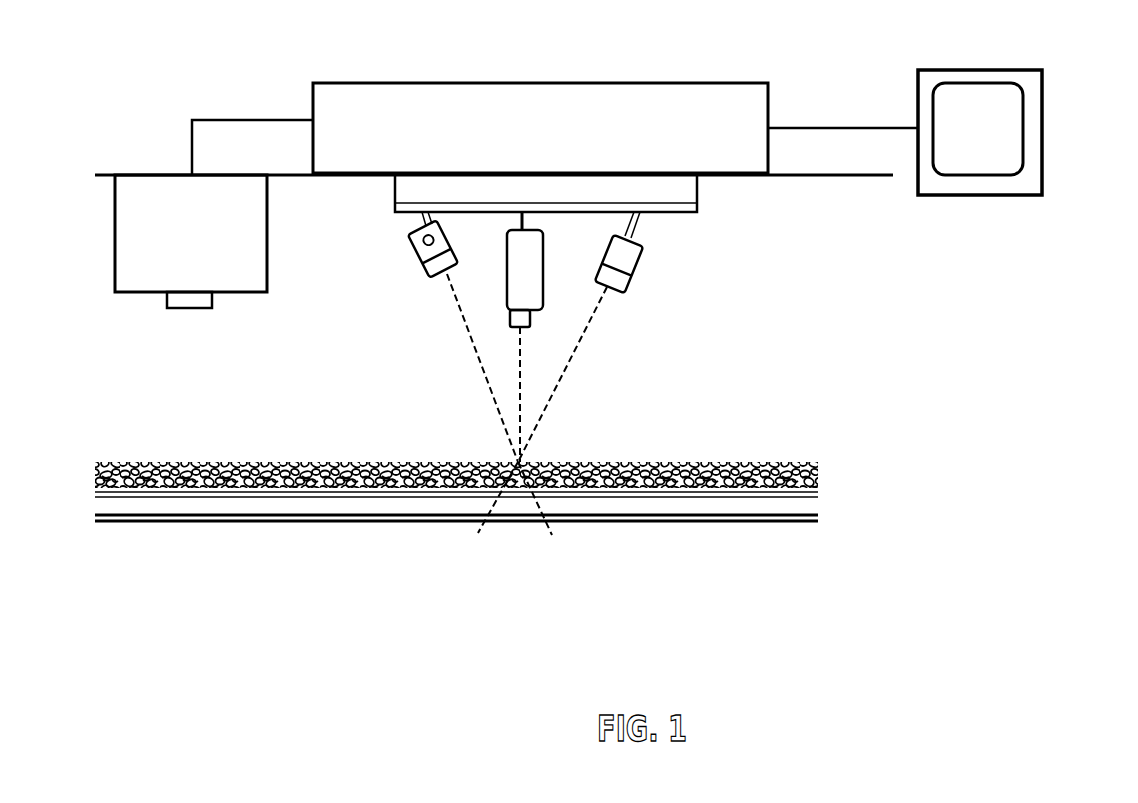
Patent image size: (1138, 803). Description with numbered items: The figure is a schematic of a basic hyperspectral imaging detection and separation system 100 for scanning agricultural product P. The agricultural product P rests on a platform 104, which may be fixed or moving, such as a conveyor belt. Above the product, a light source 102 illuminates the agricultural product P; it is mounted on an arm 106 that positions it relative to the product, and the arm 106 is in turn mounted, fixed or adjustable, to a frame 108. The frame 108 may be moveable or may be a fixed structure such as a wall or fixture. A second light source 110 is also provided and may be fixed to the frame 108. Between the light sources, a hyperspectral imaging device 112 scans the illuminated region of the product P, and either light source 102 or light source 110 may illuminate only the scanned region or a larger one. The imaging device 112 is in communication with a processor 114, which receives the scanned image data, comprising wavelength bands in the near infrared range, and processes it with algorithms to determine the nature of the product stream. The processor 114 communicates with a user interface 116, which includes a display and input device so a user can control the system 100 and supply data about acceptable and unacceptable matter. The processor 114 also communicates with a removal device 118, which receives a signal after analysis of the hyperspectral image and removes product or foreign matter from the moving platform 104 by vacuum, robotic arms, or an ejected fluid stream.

The system 100 is at (150, 46).
The light source 102 is at (637, 268).
The platform 104 is at (813, 510).
The arm 106 is at (642, 220).
The frame 108 is at (700, 187).
The second light source 110 is at (410, 243).
The hyperspectral imaging device 112 is at (545, 242).
The processor 114 is at (540, 128).
The user interface 116 is at (1042, 133).
The removal device 118 is at (191, 241).
The agricultural product P is at (456, 469).